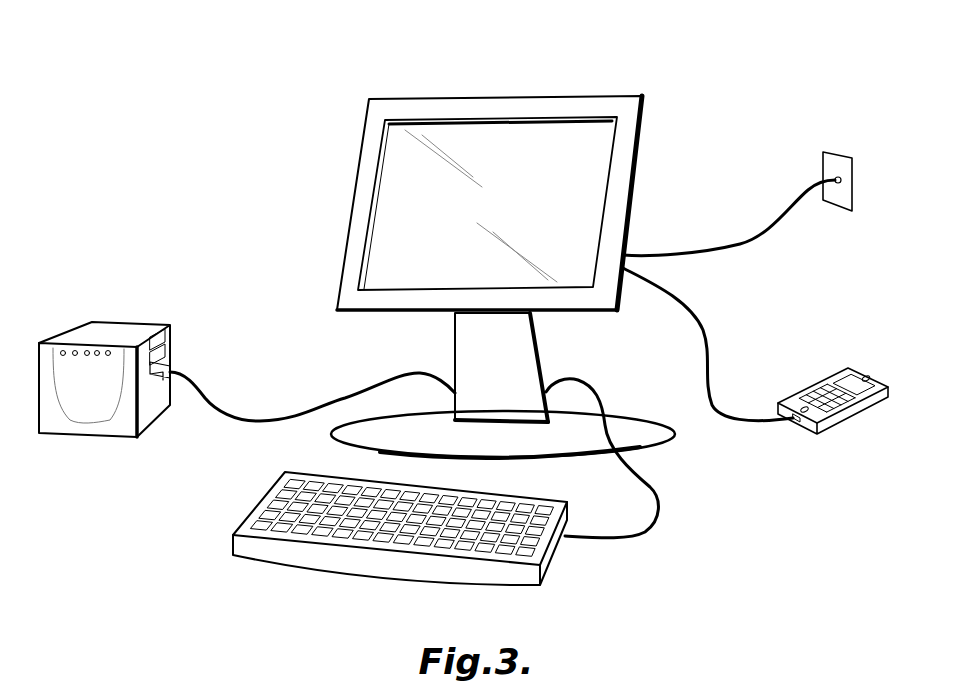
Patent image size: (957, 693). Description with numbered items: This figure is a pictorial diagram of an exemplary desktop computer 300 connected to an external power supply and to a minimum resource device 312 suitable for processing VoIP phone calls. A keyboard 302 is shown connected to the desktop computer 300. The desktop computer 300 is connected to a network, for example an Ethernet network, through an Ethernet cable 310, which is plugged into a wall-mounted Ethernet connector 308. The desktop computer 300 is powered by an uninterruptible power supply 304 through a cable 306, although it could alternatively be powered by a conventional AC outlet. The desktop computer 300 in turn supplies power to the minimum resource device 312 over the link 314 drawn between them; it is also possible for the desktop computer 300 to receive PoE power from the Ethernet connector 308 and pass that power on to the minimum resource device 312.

The desktop computer 300 is at (506, 98).
The keyboard 302 is at (252, 510).
The uninterruptible power supply (UPS) 304 is at (124, 322).
The cable 306 is at (262, 420).
The Ethernet connector 308 is at (836, 152).
The Ethernet cable 310 is at (740, 244).
The minimum resource device 312 is at (820, 380).
The cable to mobile device 314 is at (688, 298).